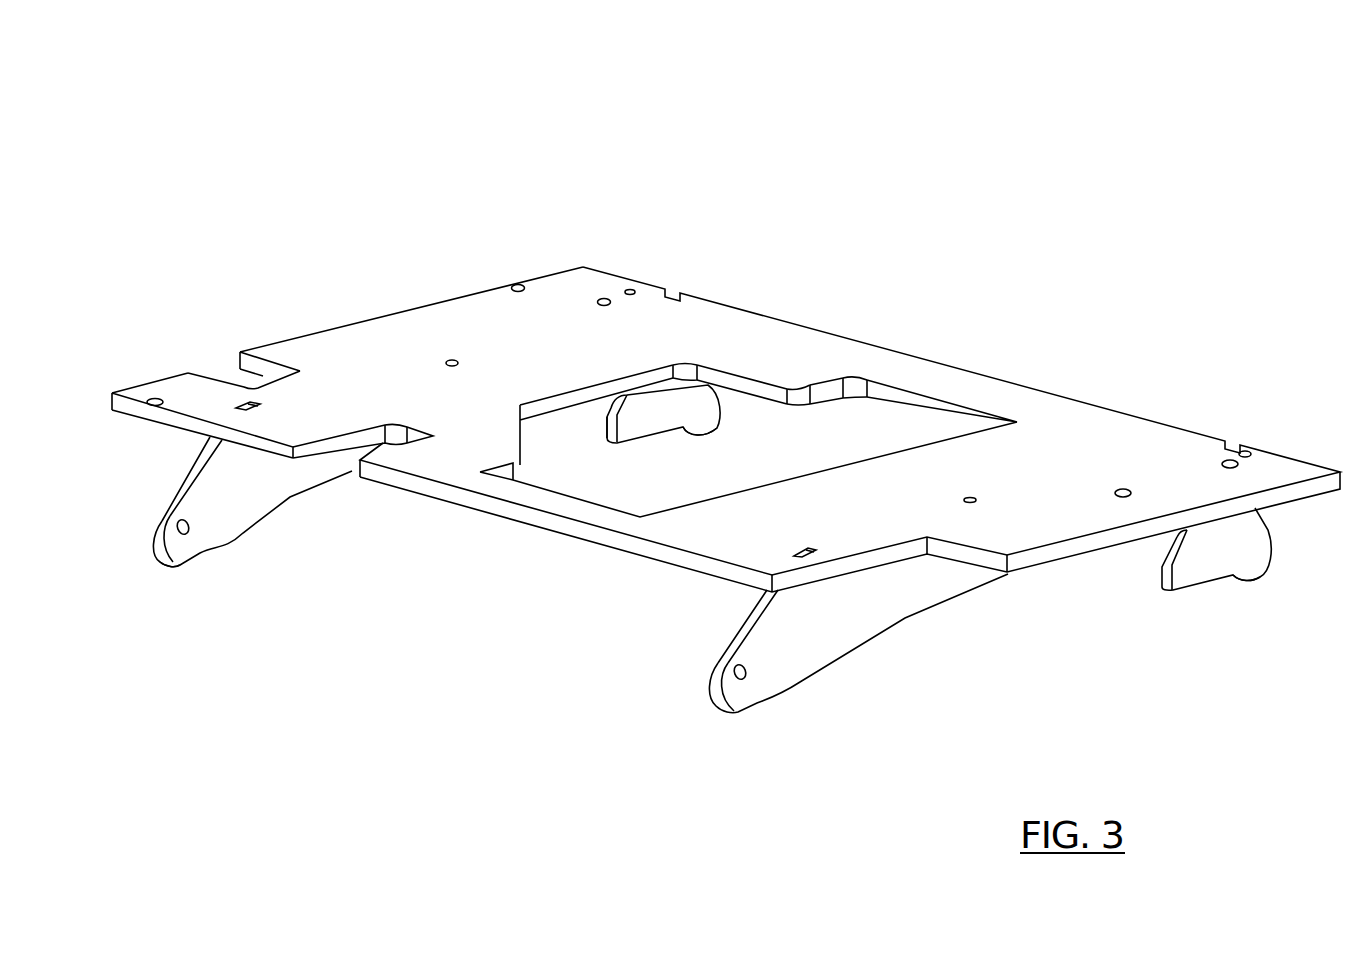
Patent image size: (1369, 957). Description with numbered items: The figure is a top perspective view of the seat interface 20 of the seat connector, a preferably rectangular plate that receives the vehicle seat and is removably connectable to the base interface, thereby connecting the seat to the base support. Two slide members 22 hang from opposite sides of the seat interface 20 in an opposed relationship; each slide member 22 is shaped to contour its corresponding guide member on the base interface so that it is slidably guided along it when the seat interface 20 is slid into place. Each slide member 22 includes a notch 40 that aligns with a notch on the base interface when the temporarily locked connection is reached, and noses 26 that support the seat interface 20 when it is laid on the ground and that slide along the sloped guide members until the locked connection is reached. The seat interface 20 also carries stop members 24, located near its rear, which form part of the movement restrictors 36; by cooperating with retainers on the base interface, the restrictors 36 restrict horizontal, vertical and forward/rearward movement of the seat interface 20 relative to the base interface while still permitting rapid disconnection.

The seat interface 20 is at (868, 165).
The slide member 22 is at (247, 507).
The stop member 24 is at (939, 469).
The movement restrictor 36 is at (645, 412).
The nose 26 is at (177, 568).
The notch 40 is at (186, 524).